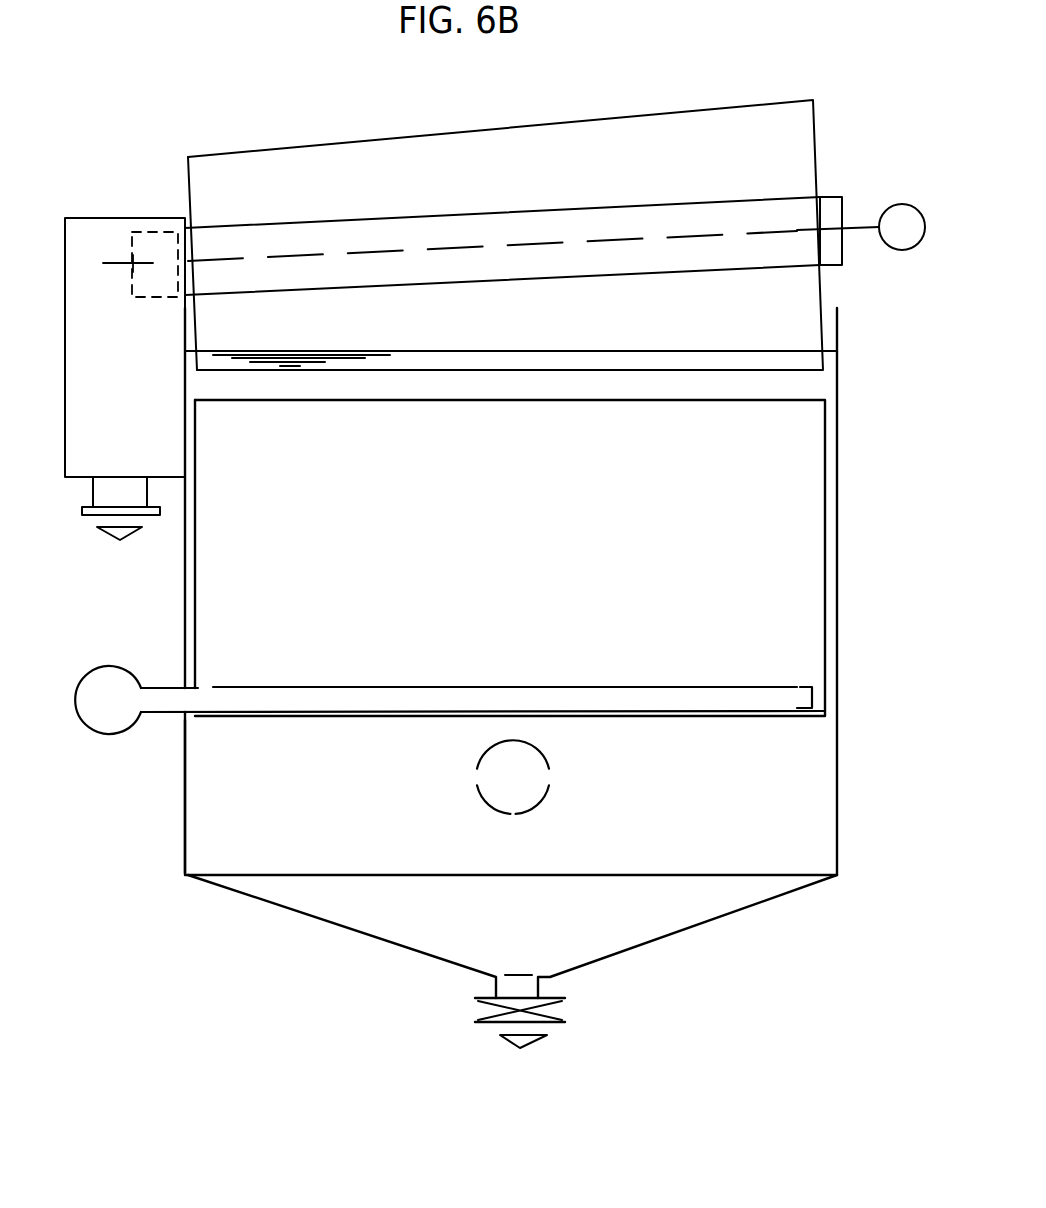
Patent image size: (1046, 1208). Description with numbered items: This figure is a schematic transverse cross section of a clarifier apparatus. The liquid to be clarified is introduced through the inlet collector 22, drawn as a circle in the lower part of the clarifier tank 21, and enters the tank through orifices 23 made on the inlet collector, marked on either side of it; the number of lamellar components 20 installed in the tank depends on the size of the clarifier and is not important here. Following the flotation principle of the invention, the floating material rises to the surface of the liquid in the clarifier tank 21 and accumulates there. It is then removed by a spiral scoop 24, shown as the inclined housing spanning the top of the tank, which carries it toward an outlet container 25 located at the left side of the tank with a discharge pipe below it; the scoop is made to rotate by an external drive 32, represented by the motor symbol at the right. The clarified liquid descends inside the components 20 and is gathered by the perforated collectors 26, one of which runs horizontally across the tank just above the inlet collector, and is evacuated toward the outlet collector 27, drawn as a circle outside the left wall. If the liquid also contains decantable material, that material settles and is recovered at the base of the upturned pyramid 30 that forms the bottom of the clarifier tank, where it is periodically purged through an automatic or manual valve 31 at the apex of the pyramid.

The components 20 is at (195, 602).
The clarifier tank 21 is at (185, 807).
The inlet collector 22 is at (513, 816).
The orifices 23 is at (574, 778).
The spiral scoop 24 is at (306, 158).
The outlet container 25 is at (112, 230).
The perforated collectors 26 is at (157, 700).
The outlet collector 27 is at (103, 728).
The upturned pyramid 30 is at (380, 932).
The valve 31 is at (565, 1010).
The external drive 32 is at (902, 250).